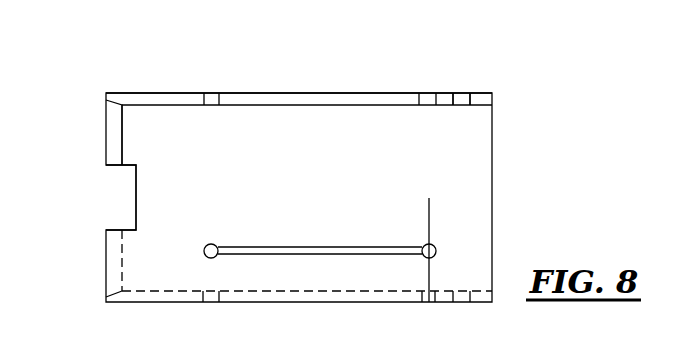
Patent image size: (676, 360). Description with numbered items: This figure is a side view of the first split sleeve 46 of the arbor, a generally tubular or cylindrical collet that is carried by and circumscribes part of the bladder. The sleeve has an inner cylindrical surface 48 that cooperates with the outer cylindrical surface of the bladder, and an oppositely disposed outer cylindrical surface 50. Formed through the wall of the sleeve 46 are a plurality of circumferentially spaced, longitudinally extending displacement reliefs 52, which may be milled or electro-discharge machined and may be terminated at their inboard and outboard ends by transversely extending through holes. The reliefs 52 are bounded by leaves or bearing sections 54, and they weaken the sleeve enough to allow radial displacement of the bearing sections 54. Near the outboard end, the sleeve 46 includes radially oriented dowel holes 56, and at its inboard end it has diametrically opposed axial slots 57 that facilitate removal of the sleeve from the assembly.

The first split sleeve 46 is at (125, 71).
The inner cylindrical surface 48 is at (172, 106).
The outer cylindrical surface 50 is at (260, 93).
The displacement reliefs 52 is at (305, 98).
The bearing sections 54 is at (280, 213).
The dowel holes 56 is at (454, 102).
The axial slots 57 is at (137, 167).